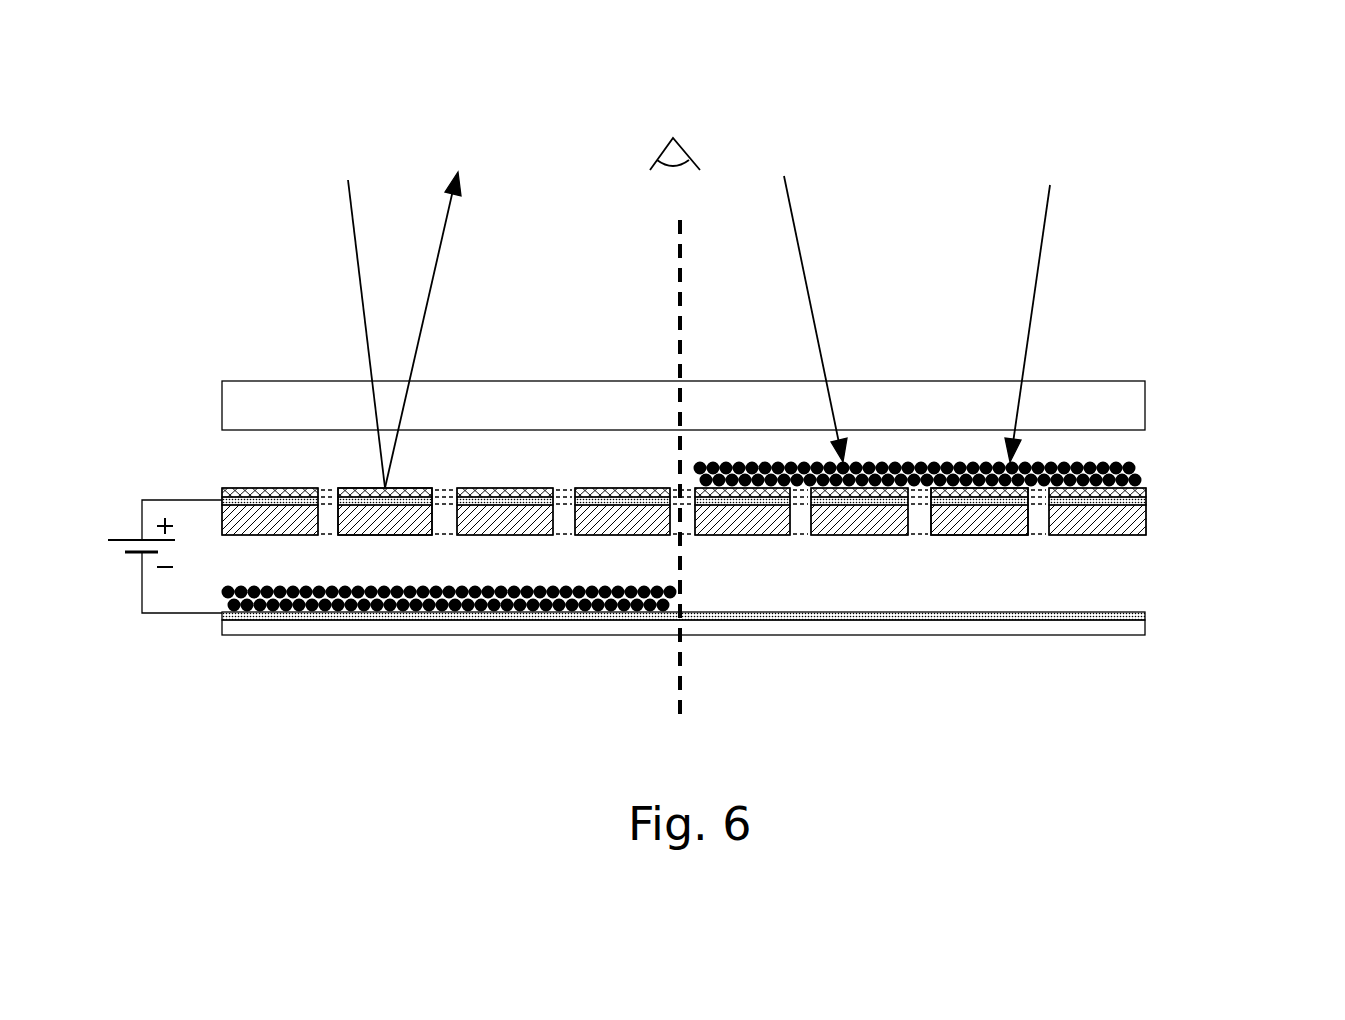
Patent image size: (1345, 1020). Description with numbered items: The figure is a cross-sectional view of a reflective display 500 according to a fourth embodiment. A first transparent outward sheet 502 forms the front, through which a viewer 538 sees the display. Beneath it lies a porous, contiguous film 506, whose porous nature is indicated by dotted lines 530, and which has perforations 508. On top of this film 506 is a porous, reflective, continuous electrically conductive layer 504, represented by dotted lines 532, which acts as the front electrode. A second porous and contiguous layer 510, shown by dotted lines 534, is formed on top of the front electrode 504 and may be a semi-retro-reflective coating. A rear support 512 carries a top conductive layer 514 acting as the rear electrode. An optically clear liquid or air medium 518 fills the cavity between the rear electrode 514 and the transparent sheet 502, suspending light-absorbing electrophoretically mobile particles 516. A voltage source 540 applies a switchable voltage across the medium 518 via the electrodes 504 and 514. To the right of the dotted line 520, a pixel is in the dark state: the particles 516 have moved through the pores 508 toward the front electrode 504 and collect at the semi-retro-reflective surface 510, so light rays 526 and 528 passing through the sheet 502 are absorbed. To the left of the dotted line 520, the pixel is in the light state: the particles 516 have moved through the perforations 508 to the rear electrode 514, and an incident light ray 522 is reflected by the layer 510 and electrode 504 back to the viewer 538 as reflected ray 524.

The display 500 is at (1094, 355).
The first transparent outward sheet 502 is at (222, 408).
The electrically conductive layer 504 is at (1148, 500).
The porous, contiguous film 506 is at (1148, 520).
The perforations 508 is at (1015, 565).
The second porous and contiguous layer 510 is at (245, 488).
The rear support 512 is at (870, 632).
The top conductive layer 514 is at (1122, 612).
The electrophoretically mobile particles 516 is at (1143, 466).
The optically clear liquid or air medium 518 is at (350, 470).
The dotted line 520 is at (672, 262).
The incident light ray 522 is at (348, 213).
The reflected light ray 524 is at (442, 240).
The light ray 526 is at (795, 215).
The light ray 528 is at (1042, 228).
The dotted lines 530 is at (425, 563).
The dotted lines 532 is at (448, 492).
The dotted lines 534 is at (566, 492).
The viewer 538 is at (690, 160).
The voltage source 540 is at (140, 585).